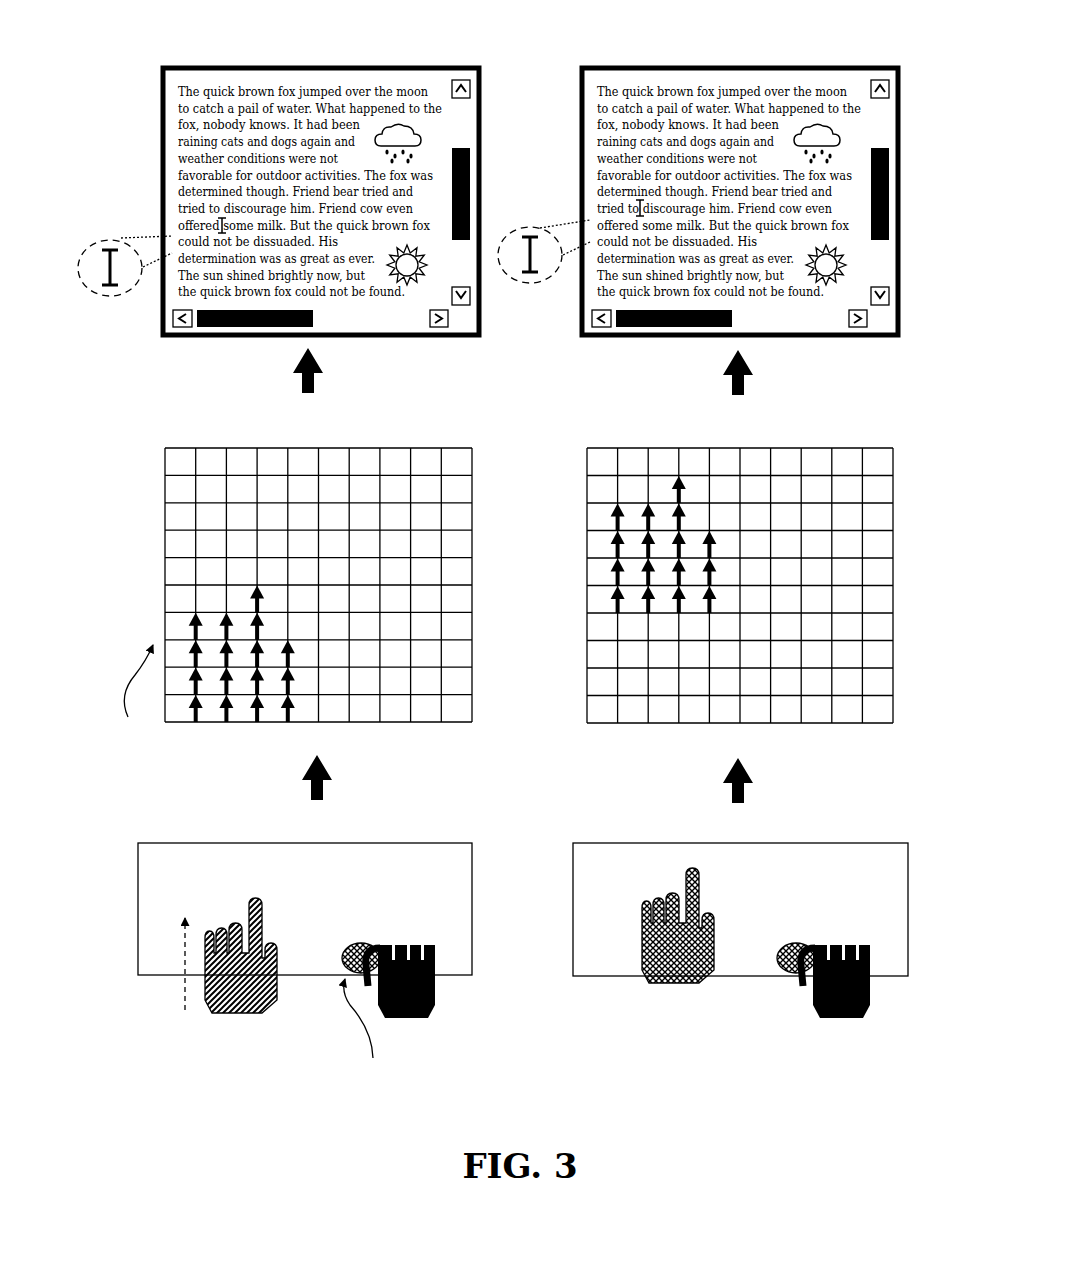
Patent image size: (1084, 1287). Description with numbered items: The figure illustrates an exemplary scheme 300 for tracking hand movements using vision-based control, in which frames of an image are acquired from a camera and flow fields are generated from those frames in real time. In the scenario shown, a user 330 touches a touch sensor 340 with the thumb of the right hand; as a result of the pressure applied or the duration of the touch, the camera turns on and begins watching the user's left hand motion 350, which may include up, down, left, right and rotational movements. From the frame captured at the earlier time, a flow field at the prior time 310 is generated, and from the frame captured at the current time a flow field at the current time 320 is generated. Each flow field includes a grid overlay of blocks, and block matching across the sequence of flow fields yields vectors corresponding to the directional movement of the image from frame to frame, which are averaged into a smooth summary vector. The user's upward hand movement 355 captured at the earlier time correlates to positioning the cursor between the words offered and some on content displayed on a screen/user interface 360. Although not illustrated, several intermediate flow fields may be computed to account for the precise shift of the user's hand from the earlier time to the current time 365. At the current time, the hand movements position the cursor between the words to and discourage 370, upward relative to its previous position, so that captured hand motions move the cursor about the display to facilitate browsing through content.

The scheme to track hand movements 300 is at (140, 48).
The flow field at T-1 310 is at (427, 448).
The flow field at T 320 is at (857, 448).
The user 330 is at (406, 939).
The touch sensor 340 is at (429, 1057).
The left hand motion 350 is at (157, 989).
The upward hand movement 355 is at (173, 1079).
The screen/user interface 360 is at (390, 68).
The shift of the user's hand from T-1 to T 365 is at (617, 1058).
The cursor position at time T 370 is at (803, 68).